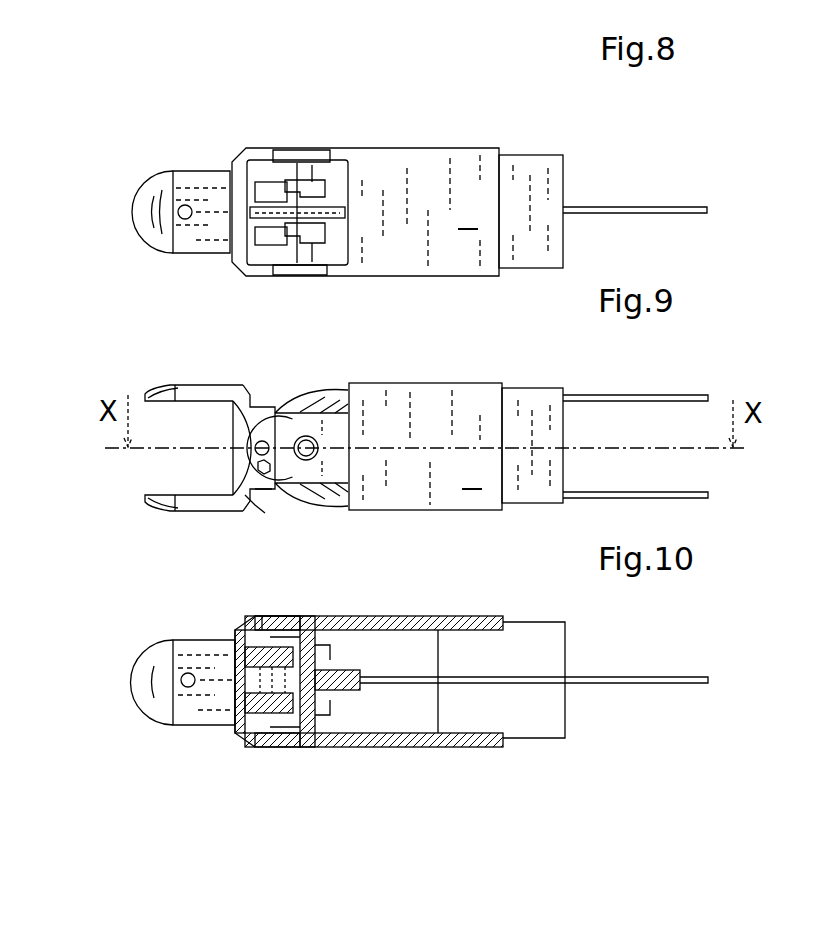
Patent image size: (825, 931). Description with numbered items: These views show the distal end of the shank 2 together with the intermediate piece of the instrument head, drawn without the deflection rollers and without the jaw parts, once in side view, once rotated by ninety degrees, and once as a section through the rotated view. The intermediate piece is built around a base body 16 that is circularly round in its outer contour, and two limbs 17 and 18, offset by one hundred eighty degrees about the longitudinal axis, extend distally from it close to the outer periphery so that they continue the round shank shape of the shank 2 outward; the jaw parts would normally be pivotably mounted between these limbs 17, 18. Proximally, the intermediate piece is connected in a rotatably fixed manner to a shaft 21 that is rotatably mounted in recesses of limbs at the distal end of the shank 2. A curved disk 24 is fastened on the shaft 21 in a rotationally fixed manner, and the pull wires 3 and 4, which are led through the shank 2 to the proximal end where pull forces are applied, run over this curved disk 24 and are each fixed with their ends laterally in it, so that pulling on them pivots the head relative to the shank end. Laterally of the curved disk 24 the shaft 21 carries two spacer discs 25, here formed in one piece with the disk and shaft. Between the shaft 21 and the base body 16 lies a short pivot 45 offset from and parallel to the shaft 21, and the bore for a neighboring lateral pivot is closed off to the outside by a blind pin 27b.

In FIG. 8, the shank 2 is at (397, 212).
In FIG. 9, the shank 2 is at (456, 446).
In FIG. 10, the shank 2 is at (453, 627).
In FIG. 8, the pull wire 3 is at (708, 210).
In FIG. 9, the pull wire 3 is at (710, 494).
In FIG. 10, the pull wire 3 is at (710, 680).
In FIG. 9, the pull wire 4 is at (710, 396).
In FIG. 9, the base body 16 is at (253, 498).
In FIG. 10, the base body 16 is at (230, 707).
In FIG. 8, the limb 17 is at (191, 183).
In FIG. 9, the limb 17 is at (210, 505).
In FIG. 10, the limb 17 is at (163, 697).
In FIG. 9, the limb 18 is at (182, 400).
In FIG. 8, the shaft 21 is at (313, 255).
In FIG. 9, the shaft 21 is at (313, 448).
In FIG. 10, the shaft 21 is at (310, 620).
In FIG. 8, the curved disk 24 is at (347, 202).
In FIG. 9, the curved disk 24 is at (325, 493).
In FIG. 10, the curved disk 24 is at (373, 743).
In FIG. 8, the spacer disc 25 is at (317, 197).
In FIG. 10, the spacer disc 25 is at (337, 743).
In FIG. 8, the blind pin 27b is at (270, 156).
In FIG. 9, the blind pin 27b is at (273, 497).
In FIG. 9, the short pivot 45 is at (262, 440).
In FIG. 10, the short pivot 45 is at (268, 615).